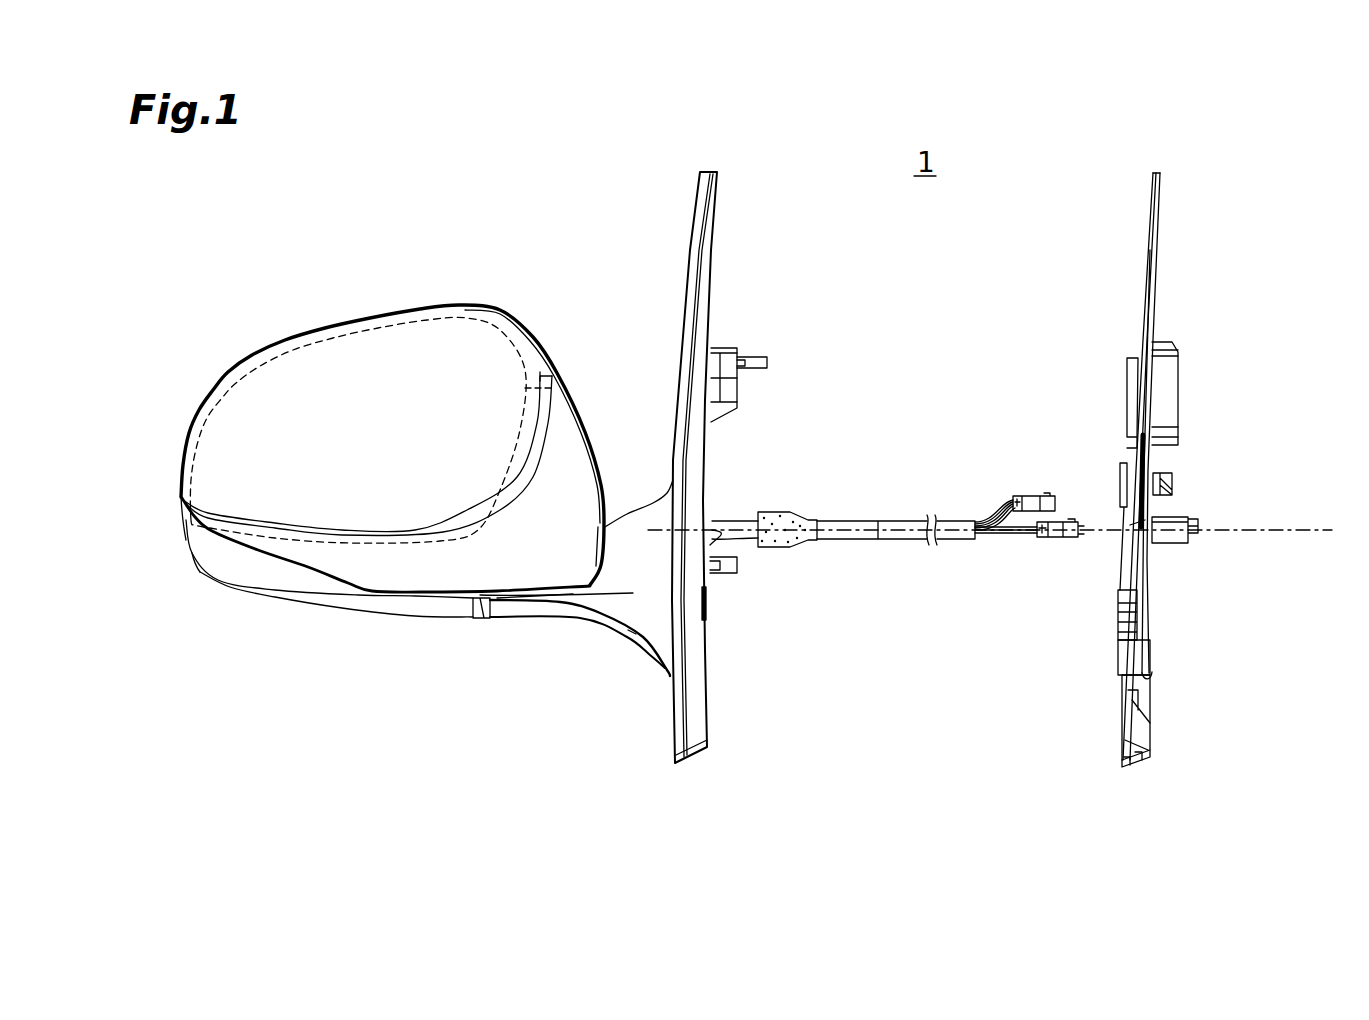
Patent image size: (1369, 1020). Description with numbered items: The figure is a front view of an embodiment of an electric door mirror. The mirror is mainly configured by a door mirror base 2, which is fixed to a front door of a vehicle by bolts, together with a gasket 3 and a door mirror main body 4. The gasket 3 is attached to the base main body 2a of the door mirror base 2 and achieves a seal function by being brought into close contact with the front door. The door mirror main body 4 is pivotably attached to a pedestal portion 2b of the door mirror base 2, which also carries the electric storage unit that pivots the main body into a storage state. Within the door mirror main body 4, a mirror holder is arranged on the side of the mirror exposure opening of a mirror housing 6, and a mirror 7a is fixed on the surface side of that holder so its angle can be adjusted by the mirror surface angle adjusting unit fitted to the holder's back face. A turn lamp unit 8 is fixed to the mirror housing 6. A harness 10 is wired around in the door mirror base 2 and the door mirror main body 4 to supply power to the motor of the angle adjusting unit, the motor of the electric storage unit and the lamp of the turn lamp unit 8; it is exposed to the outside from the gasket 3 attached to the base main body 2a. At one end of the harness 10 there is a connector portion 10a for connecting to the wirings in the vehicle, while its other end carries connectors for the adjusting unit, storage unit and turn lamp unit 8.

The door mirror base 2 is at (657, 243).
The base main body 2a is at (707, 247).
The pedestal portion 2b is at (577, 613).
The gasket 3 is at (1152, 292).
The door mirror main body 4 is at (211, 362).
The mirror housing 6 is at (570, 463).
The mirror 7a is at (550, 384).
The turn lamp unit 8 is at (192, 550).
The harness 10 is at (732, 539).
The connector portion 10a is at (1068, 522).